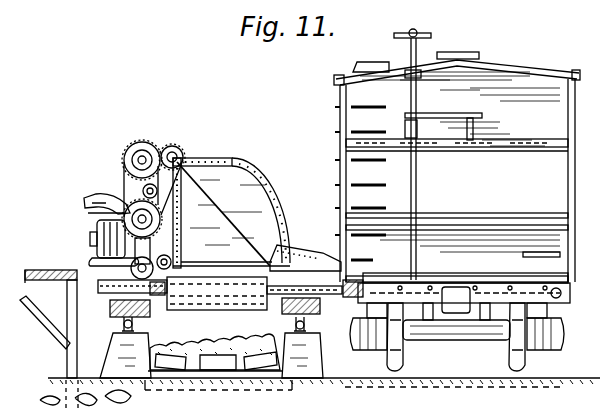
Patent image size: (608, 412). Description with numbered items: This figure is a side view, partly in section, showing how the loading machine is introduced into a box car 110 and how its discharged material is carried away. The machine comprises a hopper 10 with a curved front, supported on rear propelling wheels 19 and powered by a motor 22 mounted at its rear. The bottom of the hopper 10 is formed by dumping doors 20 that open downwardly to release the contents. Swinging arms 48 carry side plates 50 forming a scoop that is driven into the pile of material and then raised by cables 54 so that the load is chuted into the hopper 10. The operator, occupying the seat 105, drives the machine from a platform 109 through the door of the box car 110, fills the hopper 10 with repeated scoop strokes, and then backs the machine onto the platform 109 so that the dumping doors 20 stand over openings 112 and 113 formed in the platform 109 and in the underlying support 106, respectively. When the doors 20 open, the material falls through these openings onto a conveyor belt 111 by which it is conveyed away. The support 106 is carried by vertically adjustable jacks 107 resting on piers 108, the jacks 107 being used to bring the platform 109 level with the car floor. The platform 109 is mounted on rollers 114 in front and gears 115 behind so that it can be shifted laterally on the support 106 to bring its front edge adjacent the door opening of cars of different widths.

The hopper 10 is at (262, 212).
The wheels 19 is at (103, 283).
The dumping doors 20 is at (204, 313).
The motor 22 is at (90, 234).
The swinging arms 48 is at (216, 263).
The side plates 50 is at (182, 146).
The cables 54 is at (220, 206).
The seat 105 is at (121, 204).
The support 106 is at (122, 327).
The jacks 107 is at (134, 329).
The piers 108 is at (113, 347).
The platform 109 is at (342, 297).
The box car 110 is at (558, 205).
The conveyor belt 111 is at (222, 346).
The opening in platform 112 is at (272, 318).
The opening in support 113 is at (173, 350).
The rollers 114 is at (302, 257).
The gears 115 is at (110, 303).